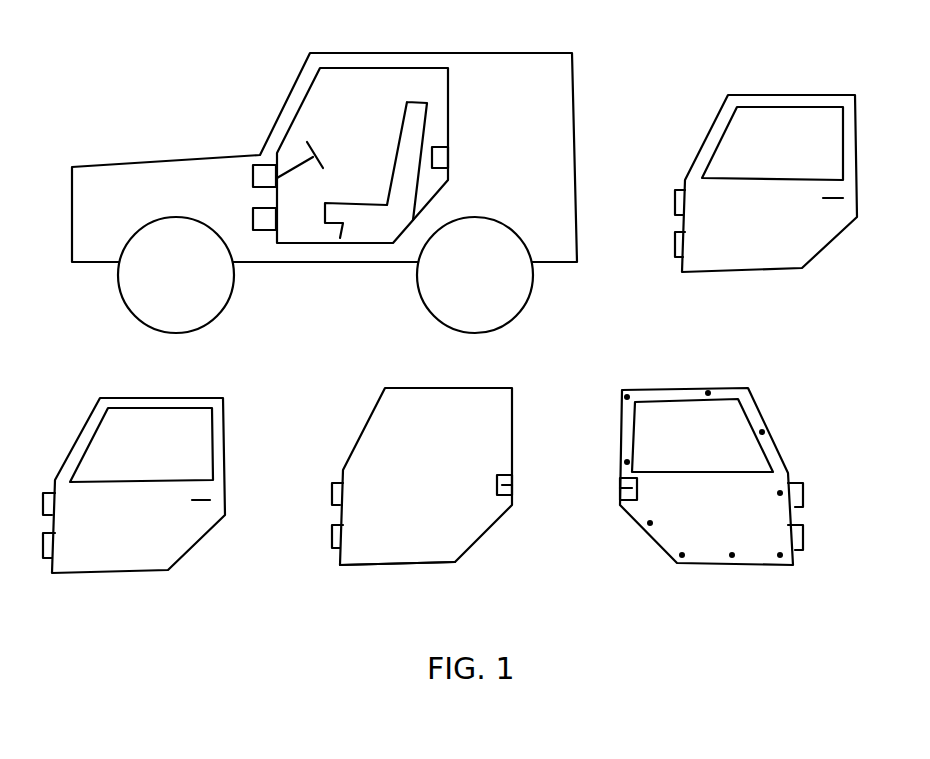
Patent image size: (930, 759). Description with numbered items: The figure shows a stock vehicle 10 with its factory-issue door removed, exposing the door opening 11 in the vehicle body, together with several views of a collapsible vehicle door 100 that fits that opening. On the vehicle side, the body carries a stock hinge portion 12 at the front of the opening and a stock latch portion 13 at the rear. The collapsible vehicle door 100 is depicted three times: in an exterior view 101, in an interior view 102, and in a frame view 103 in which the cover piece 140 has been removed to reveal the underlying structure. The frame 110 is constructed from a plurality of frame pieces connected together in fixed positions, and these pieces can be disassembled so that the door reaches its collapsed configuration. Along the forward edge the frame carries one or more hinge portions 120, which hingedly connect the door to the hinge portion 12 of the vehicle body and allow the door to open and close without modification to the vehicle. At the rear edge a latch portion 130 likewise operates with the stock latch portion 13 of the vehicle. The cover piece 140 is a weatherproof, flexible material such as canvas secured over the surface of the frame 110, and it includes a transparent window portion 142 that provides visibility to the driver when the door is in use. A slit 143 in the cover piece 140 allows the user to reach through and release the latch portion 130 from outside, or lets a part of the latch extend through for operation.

The vehicle 10 is at (324, 174).
The door opening / cabin frame 11 is at (365, 67).
The hinge portion of the vehicle body 12 is at (260, 217).
The latch portion of the vehicle 13 is at (448, 158).
The collapsible vehicle door 100 is at (693, 153).
The exterior view 101 is at (141, 489).
The interior view 102 is at (617, 427).
The frame view 103 is at (424, 470).
The frame 110 is at (435, 560).
The hinge portion 120 is at (330, 497).
The latch portion 130 is at (513, 482).
The cover piece 140 is at (132, 550).
The window portion 142 is at (173, 433).
The slit 143 is at (203, 510).